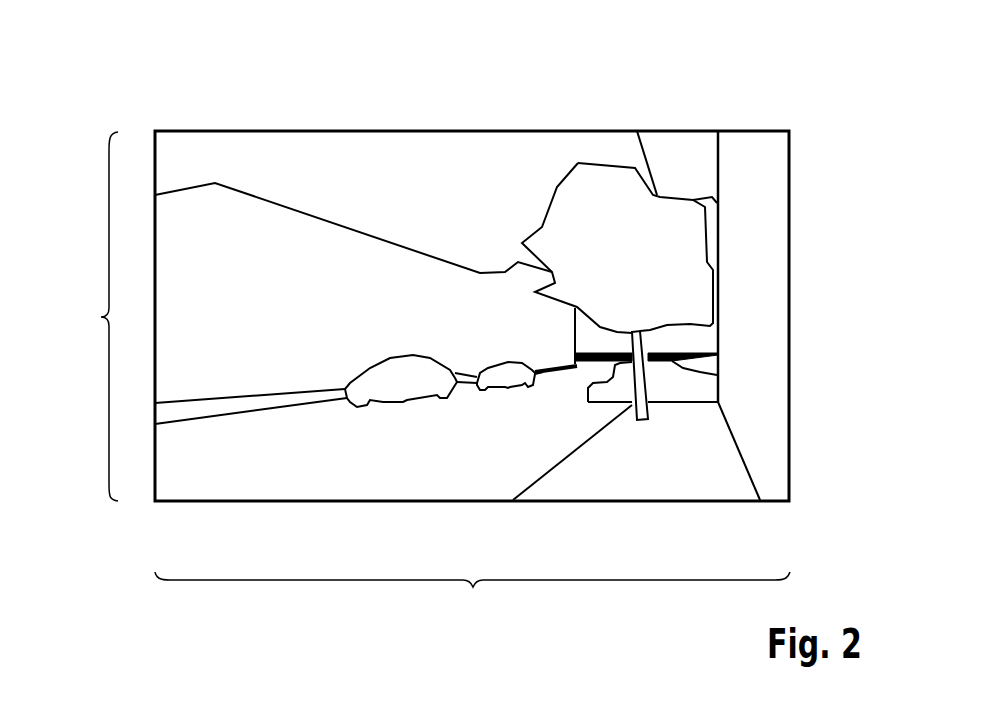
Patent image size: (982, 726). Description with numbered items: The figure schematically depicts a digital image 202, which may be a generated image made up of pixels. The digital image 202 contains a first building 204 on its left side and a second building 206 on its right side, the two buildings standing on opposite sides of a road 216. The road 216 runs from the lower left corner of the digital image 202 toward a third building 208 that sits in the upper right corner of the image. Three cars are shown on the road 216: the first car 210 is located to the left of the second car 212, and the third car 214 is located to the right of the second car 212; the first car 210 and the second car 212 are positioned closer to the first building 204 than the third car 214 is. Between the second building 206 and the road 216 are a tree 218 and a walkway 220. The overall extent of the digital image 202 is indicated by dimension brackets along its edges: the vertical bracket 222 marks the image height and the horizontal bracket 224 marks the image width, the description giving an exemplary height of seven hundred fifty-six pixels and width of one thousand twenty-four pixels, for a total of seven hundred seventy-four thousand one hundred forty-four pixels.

The digital image 202 is at (777, 117).
The first building 204 is at (242, 218).
The second building 206 is at (777, 427).
The third building 208 is at (684, 178).
The first car 210 is at (410, 393).
The second car 212 is at (501, 380).
The third car 214 is at (707, 388).
The road 216 is at (342, 492).
The tree 218 is at (601, 192).
The walkway 220 is at (730, 460).
The width 222 is at (87, 316).
The image width 224 is at (472, 597).